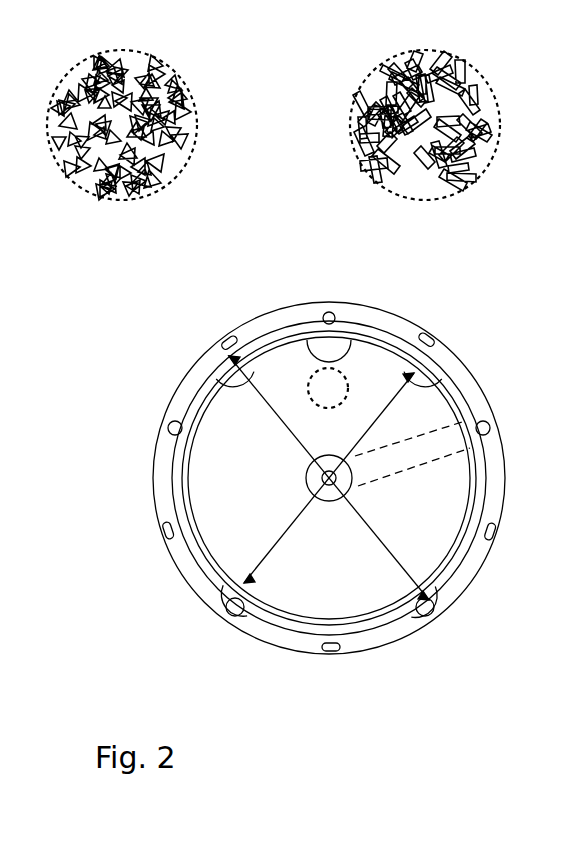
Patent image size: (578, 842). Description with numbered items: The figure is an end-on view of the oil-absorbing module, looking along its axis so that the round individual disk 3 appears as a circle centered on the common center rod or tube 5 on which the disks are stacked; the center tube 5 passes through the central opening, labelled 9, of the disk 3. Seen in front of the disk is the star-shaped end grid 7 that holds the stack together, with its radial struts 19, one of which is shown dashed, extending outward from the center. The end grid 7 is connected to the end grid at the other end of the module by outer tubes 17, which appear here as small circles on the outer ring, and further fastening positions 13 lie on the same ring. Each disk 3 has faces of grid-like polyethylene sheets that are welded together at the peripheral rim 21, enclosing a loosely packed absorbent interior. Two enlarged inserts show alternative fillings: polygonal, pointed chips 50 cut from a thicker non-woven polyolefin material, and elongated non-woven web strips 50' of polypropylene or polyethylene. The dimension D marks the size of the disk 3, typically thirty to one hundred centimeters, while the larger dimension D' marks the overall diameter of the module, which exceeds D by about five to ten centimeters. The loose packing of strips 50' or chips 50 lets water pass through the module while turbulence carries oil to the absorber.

The individual disk 3 is at (340, 585).
The center rod or tube 5 is at (316, 477).
The end grid 7 is at (198, 372).
The central bore 9 is at (348, 482).
The fastening bolt hole 13 is at (333, 311).
The outer tube 17 is at (168, 429).
The radial strut 19 is at (417, 447).
The peripheral rim 21 is at (455, 580).
The polygonal pointed chips 50 is at (185, 184).
The non-woven web strips 50' is at (402, 229).
The size of the disks D is at (367, 455).
The overall diameter of the module D' is at (325, 438).